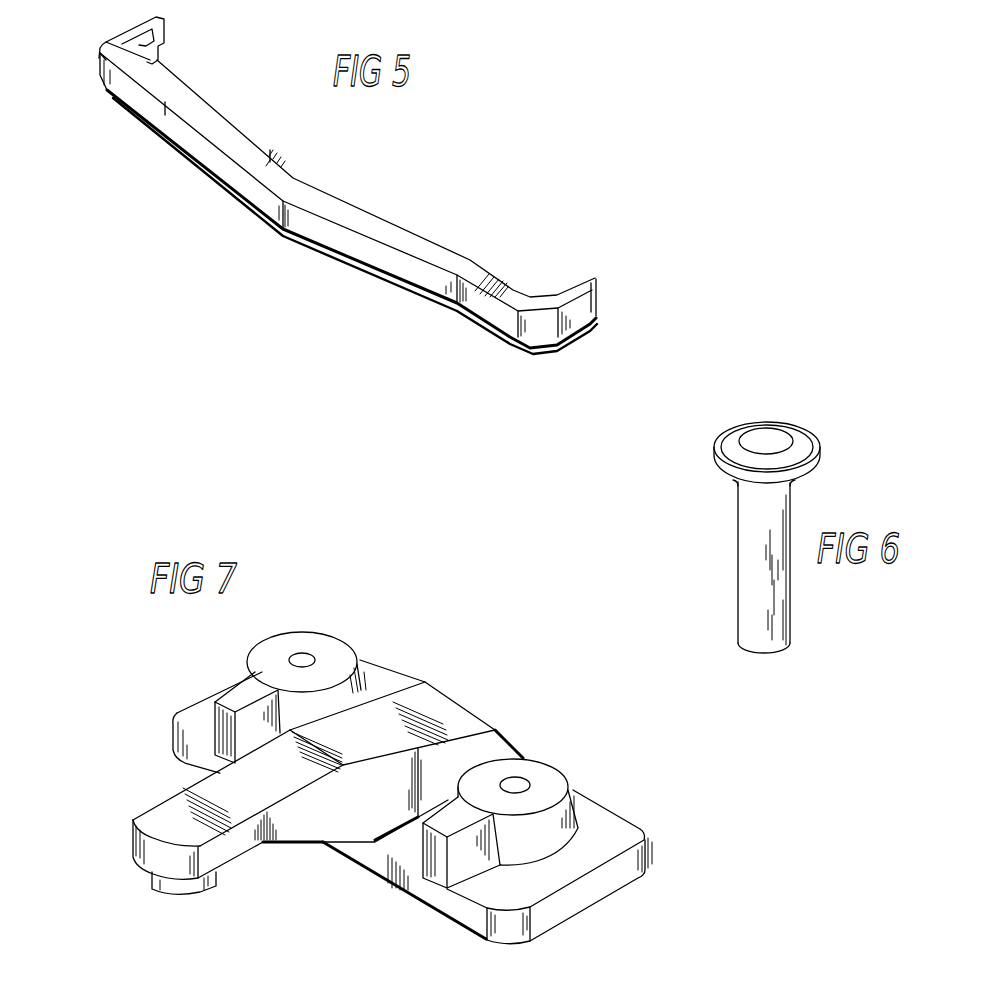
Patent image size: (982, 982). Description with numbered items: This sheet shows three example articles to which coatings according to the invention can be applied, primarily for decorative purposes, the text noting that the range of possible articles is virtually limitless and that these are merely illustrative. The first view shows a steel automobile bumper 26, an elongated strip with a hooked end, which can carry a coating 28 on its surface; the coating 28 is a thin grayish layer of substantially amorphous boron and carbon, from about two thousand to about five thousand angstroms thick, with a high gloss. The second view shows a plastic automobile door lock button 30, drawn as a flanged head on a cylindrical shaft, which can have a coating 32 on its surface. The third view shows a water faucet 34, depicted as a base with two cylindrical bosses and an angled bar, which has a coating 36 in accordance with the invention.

In FIG. 5, the steel automobile bumper 26 is at (262, 246).
In FIG. 5, the coating 28 is at (414, 247).
In FIG. 6, the plastic automobile door lock button 30 is at (720, 503).
In FIG. 6, the coating 32 is at (772, 427).
In FIG. 7, the water faucet 34 is at (547, 757).
In FIG. 7, the coating 36 is at (155, 822).